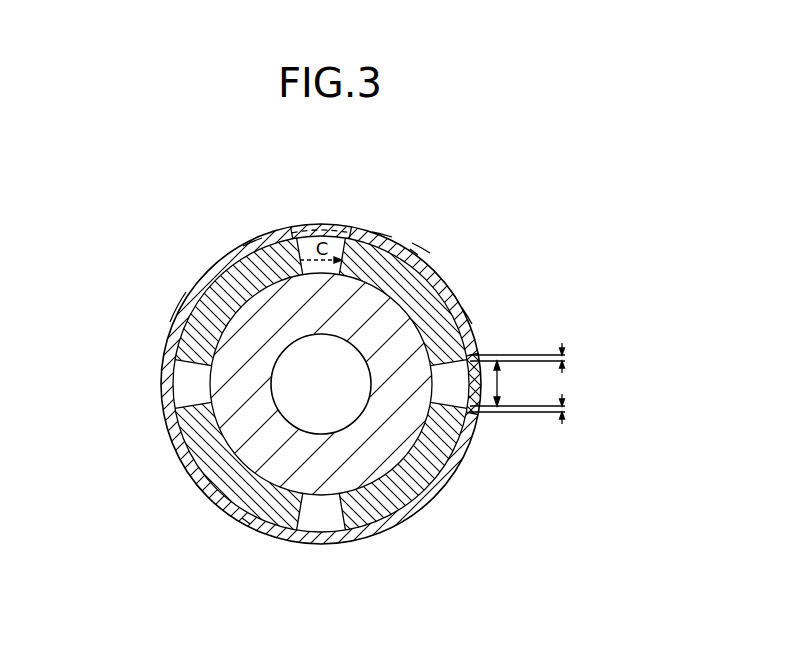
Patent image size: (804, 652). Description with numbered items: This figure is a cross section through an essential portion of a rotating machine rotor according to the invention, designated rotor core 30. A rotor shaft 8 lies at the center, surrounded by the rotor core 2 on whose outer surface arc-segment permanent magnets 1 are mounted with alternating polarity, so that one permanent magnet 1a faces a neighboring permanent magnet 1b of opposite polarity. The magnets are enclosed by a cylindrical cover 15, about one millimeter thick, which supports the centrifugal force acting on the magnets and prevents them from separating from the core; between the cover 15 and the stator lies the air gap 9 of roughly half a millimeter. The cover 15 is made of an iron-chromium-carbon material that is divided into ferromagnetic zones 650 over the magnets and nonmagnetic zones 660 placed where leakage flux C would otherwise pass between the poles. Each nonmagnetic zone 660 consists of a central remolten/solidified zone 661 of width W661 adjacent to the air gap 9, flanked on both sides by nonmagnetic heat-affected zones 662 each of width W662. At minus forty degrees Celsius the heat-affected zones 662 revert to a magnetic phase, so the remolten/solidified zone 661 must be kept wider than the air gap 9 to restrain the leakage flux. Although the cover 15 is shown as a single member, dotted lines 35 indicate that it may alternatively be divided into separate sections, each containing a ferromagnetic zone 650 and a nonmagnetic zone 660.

The permanent magnet 1 is at (458, 465).
The permanent magnet 1a is at (468, 314).
The permanent magnet 1b is at (250, 247).
The rotor core 2 is at (457, 450).
The rotor shaft 8 is at (341, 427).
The air gap 9 is at (327, 223).
The cylindrical cover 15 is at (426, 252).
The rotor core 30 is at (387, 228).
The dotted lines 35 is at (413, 247).
The ferromagnetic zone 650 is at (177, 327).
The nonmagnetic zone 660 is at (163, 383).
The remolten/solidified zone 661 is at (447, 384).
The nonmagnetic heat-affected zone 662 is at (482, 352).
The width of remolten/solidified zone W661 is at (530, 383).
The width of nonmagnetic heat-affected zone W662 is at (550, 383).